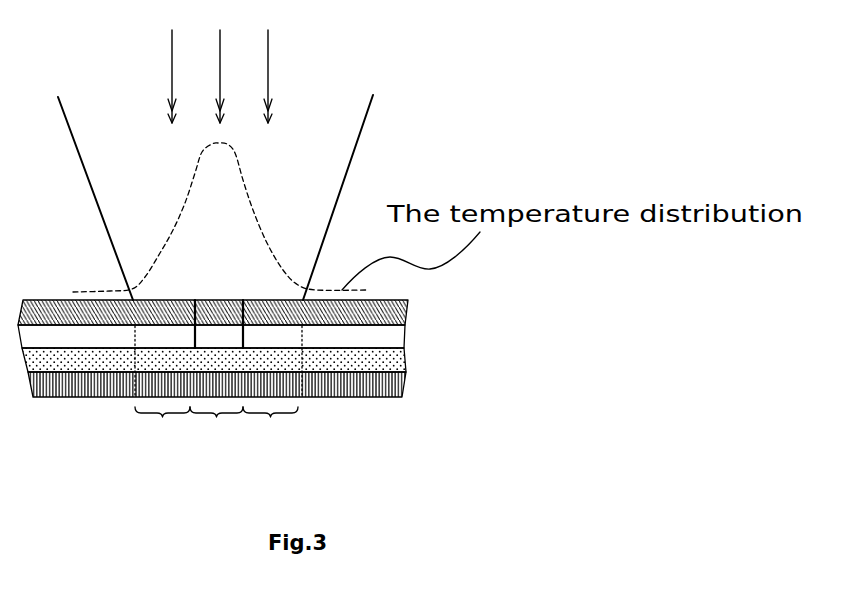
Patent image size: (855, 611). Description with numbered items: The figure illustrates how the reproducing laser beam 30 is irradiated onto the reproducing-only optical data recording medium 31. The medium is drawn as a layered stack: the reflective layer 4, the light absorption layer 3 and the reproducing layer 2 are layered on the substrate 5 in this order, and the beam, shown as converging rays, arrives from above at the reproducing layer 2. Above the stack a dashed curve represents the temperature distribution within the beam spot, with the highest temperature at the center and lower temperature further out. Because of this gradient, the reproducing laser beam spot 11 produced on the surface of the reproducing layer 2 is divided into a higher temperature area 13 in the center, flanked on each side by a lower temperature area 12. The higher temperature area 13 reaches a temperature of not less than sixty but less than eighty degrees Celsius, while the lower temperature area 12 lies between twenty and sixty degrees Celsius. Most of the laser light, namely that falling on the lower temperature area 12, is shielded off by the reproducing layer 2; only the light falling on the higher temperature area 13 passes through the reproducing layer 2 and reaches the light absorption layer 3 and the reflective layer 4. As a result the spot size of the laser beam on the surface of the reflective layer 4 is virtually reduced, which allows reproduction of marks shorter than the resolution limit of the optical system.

The reproducing layer 2 is at (407, 303).
The light absorption layer 3 is at (407, 333).
The reflective layer 4 is at (407, 363).
The substrate 5 is at (407, 390).
The reproducing laser beam spot 11 is at (393, 433).
The lower temperature area 12 is at (222, 390).
The higher temperature area 13 is at (216, 377).
The reproducing laser beam 30 is at (268, 80).
The optical data recording medium 31 is at (393, 401).